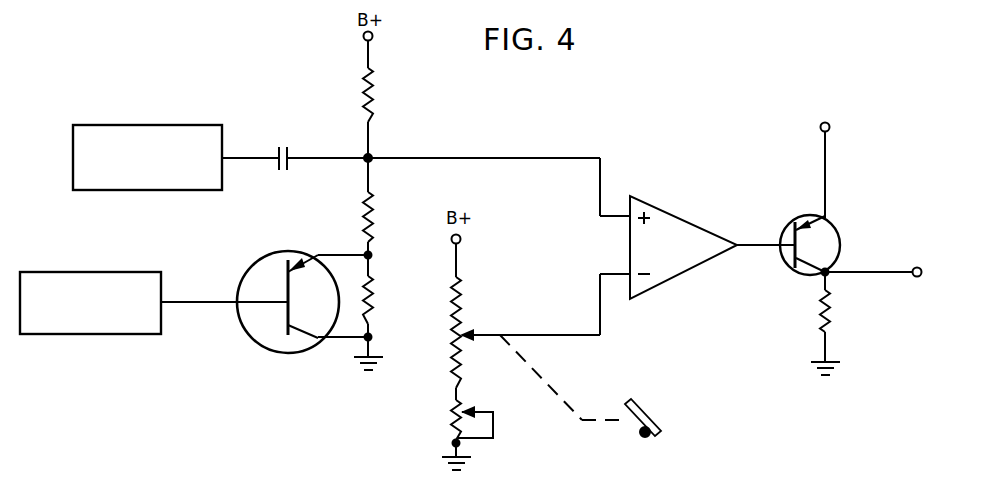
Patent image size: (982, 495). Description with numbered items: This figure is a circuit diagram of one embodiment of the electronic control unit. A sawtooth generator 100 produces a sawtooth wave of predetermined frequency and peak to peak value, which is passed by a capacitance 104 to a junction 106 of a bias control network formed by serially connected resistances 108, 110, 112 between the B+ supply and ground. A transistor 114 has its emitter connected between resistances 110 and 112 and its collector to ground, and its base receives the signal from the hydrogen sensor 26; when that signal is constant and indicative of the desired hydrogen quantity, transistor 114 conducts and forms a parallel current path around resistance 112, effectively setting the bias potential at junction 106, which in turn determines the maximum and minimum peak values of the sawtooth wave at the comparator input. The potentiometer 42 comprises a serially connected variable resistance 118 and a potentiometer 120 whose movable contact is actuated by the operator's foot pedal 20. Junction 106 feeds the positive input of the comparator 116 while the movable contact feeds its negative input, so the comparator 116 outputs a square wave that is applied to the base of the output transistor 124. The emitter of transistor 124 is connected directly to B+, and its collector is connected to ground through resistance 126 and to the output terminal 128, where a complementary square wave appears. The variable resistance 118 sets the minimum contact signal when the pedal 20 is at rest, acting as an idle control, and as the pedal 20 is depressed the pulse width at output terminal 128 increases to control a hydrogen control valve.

The sawtooth generator 100 is at (150, 124).
The capacitance 104 is at (280, 150).
The junction 106 is at (371, 155).
The resistance 108 is at (374, 100).
The resistance 110 is at (373, 226).
The resistance 112 is at (373, 305).
The transistor 114 is at (250, 341).
The hydrogen sensor 26 is at (87, 334).
The potentiometer 120 is at (456, 365).
The potentiometer 42 is at (472, 322).
The variable resistance 118 is at (450, 430).
The foot pedal 20 is at (658, 424).
The comparator 116 is at (667, 214).
The output transistor 124 is at (801, 276).
The resistance 126 is at (831, 324).
The output terminal 128 is at (914, 267).